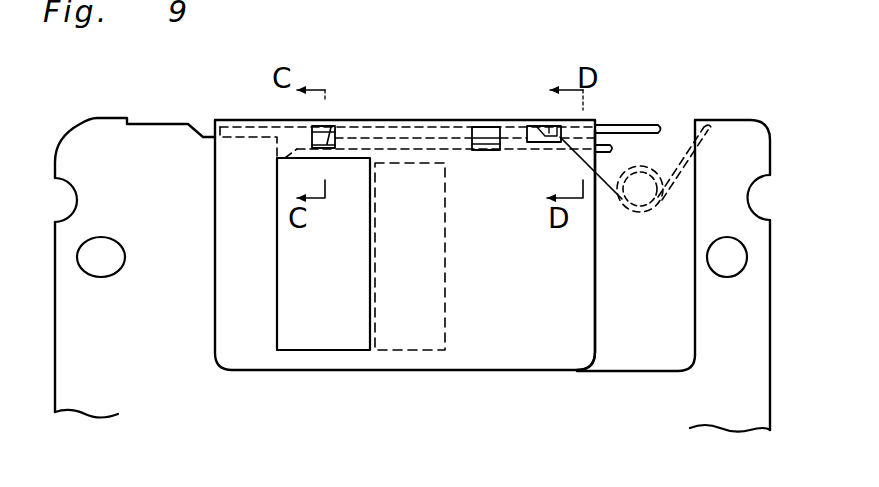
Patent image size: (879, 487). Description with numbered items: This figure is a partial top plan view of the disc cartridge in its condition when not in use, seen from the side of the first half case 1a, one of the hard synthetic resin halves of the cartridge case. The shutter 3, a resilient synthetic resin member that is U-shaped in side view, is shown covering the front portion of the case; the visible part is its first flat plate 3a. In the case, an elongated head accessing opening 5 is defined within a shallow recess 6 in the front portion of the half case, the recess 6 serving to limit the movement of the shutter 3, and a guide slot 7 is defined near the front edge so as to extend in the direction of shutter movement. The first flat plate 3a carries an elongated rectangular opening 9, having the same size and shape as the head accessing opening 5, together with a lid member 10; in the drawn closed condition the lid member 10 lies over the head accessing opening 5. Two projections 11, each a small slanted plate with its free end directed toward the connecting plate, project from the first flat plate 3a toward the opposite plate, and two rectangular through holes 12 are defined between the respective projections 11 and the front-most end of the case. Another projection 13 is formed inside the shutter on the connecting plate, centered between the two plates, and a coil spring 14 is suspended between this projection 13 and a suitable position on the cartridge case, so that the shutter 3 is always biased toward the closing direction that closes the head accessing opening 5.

The first half case 1a is at (63, 380).
The shutter 3 is at (455, 293).
The first flat plate 3a is at (508, 345).
The head accessing opening 5 is at (442, 313).
The shallow recess 6 is at (697, 168).
The guide slot 7 is at (402, 140).
The elongated rectangular opening 9 is at (278, 332).
The lid member 10 is at (572, 343).
The projection 11 is at (333, 140).
The through hole 12 is at (312, 137).
The projection 13 is at (540, 127).
The coil spring 14 is at (640, 166).